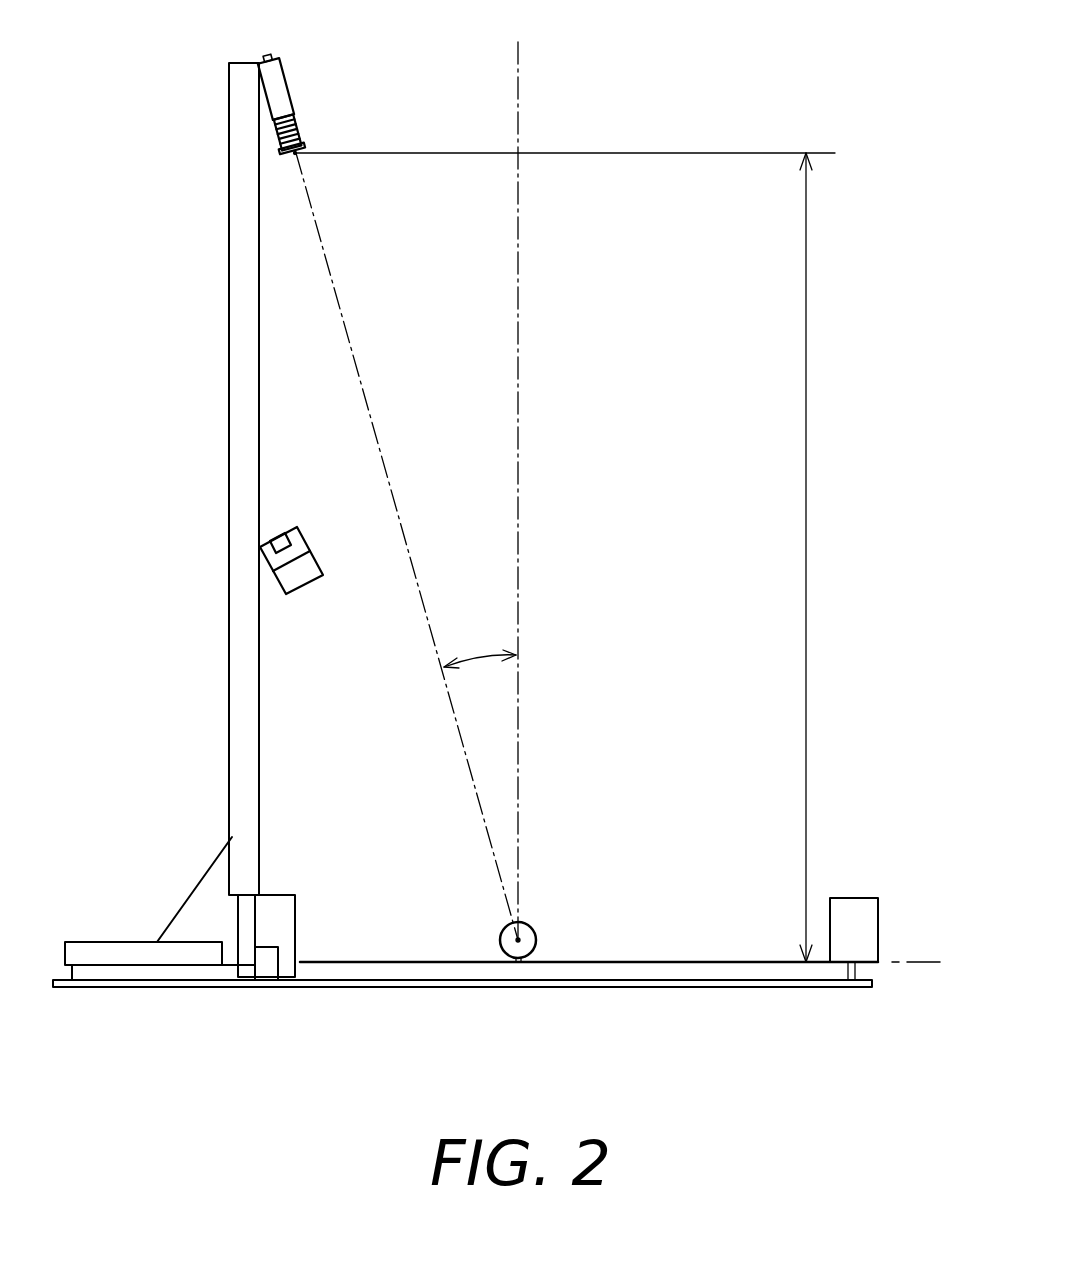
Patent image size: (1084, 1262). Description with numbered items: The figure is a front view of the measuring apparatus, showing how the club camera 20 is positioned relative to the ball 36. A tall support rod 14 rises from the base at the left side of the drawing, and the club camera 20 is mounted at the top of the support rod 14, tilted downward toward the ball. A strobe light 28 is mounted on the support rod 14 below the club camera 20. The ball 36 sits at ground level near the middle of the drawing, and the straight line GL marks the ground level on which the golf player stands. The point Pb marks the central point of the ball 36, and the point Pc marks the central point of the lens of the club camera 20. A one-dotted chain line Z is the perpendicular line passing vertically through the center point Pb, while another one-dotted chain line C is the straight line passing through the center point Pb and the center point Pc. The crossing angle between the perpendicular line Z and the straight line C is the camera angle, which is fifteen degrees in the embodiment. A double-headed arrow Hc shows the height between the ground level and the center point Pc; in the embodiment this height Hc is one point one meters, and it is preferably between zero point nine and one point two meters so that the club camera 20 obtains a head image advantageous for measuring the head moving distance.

The support rod 14 is at (247, 337).
The club camera 20 is at (272, 88).
The strobe light 28 is at (280, 541).
The ball 36 is at (520, 922).
The central point of lens of club camera Pc is at (298, 155).
The central point of ball Pb is at (520, 940).
The straight line C is at (330, 271).
The perpendicular line Z is at (518, 68).
The height Hc is at (821, 557).
The ground level GL is at (895, 960).